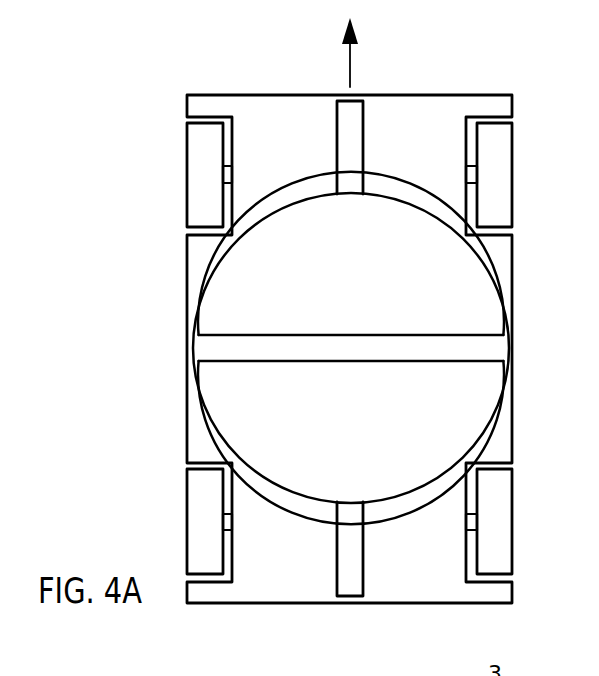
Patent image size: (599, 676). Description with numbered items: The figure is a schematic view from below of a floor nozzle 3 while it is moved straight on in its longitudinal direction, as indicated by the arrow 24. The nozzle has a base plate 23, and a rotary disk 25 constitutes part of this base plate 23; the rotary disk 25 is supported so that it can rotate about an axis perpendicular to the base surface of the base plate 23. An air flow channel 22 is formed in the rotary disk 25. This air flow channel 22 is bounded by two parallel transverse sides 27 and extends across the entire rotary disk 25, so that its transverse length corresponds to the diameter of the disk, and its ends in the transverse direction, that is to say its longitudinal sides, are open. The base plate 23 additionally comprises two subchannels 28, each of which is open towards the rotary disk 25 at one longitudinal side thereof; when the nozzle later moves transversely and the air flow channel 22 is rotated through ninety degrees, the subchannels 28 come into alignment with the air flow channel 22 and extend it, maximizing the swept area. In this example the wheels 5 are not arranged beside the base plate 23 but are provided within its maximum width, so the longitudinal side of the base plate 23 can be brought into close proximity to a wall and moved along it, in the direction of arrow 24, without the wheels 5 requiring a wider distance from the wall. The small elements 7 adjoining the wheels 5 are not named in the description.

The floor nozzle 3 is at (485, 81).
The wheels 5 is at (187, 162).
The connecting elements 7 is at (231, 159).
The air flow channel 22 is at (462, 348).
The base plate 23 is at (406, 590).
The arrow 24 is at (352, 62).
The rotary disk 25 is at (462, 300).
The transverse sides 27 is at (260, 335).
The subchannels 28 is at (337, 152).